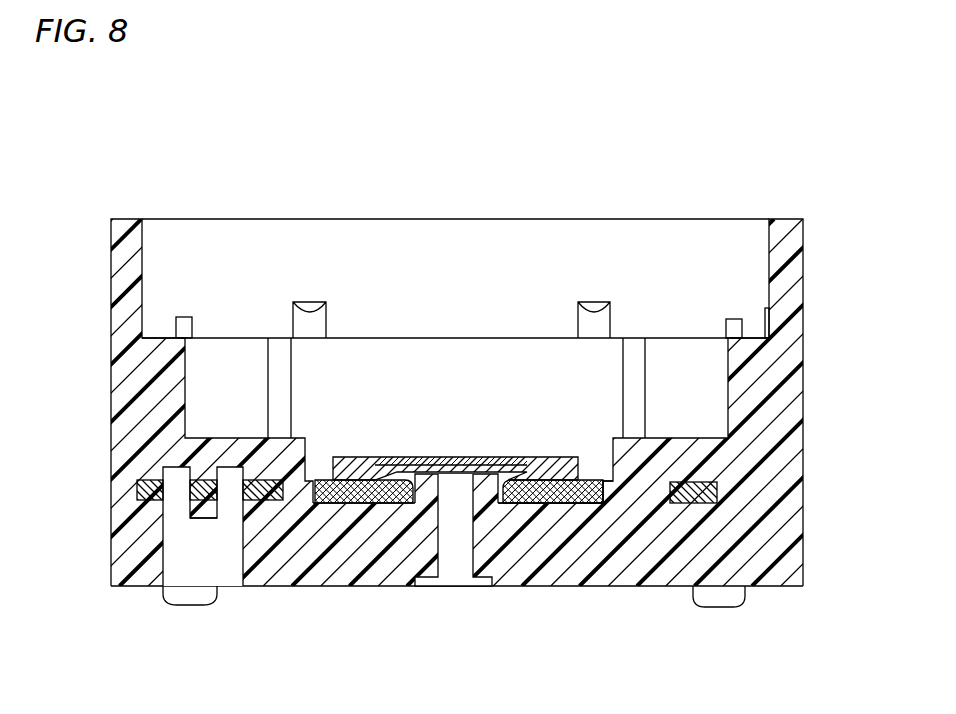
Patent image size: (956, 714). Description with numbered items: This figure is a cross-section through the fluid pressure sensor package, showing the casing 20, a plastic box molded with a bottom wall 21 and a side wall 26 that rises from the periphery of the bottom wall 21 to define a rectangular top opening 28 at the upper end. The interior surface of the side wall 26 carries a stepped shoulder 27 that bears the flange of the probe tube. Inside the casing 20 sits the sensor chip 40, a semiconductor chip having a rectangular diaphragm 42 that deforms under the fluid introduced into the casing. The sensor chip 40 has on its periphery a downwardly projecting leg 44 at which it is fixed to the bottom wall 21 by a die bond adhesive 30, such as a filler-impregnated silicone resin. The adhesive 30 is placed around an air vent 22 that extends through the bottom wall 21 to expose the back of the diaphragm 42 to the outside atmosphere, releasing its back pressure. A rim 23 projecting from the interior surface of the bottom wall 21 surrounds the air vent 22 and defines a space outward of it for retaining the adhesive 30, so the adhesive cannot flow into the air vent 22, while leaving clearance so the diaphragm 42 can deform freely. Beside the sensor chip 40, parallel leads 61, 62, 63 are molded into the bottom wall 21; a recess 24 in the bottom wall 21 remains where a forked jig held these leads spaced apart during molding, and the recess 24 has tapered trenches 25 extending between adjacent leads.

The casing 20 is at (112, 588).
The bottom wall 21 is at (585, 563).
The air vent 22 is at (457, 553).
The rim 23 is at (488, 490).
The recess 24 is at (215, 558).
The tapered trenches 25 is at (175, 484).
The side wall 26 is at (803, 364).
The stepped shoulder 27 is at (160, 336).
The top opening 28 is at (273, 230).
The die bond adhesive 30 is at (600, 503).
The sensor chip 40 is at (389, 458).
The diaphragm 42 is at (478, 457).
The leg 44 is at (362, 504).
The lead 61 is at (150, 480).
The lead 62 is at (205, 480).
The lead 63 is at (258, 480).